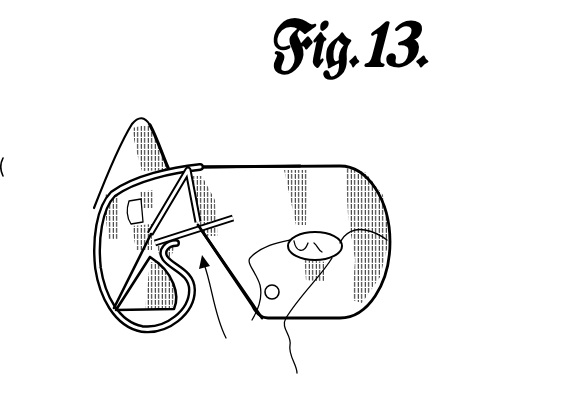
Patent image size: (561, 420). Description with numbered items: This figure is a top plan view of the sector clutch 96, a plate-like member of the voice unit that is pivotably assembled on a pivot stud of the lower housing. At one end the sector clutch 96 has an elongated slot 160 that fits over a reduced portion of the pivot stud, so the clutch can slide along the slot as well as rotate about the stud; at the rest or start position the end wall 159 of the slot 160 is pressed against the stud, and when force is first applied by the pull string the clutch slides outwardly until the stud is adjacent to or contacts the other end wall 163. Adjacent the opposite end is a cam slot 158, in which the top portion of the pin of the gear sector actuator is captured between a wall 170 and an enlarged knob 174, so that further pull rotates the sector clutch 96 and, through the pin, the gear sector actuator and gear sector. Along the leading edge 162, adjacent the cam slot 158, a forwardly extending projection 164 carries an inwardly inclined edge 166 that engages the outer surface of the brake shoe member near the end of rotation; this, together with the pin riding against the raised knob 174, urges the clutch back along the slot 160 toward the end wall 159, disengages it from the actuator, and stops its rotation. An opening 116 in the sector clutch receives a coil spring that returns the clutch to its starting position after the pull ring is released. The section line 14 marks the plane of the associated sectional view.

The section line 14 is at (77, 409).
The sector clutch 96 is at (276, 153).
The opening 116 is at (267, 298).
The cam slot 158 is at (196, 312).
The end wall 159 is at (387, 240).
The elongated slot 160 is at (318, 312).
The leading edge 162 is at (217, 167).
The other end wall 163 is at (218, 311).
The forwardly extending projection 164 is at (128, 138).
The inwardly inclined edge 166 is at (160, 141).
The wall 170 is at (170, 248).
The enlarged knob 174 is at (166, 325).